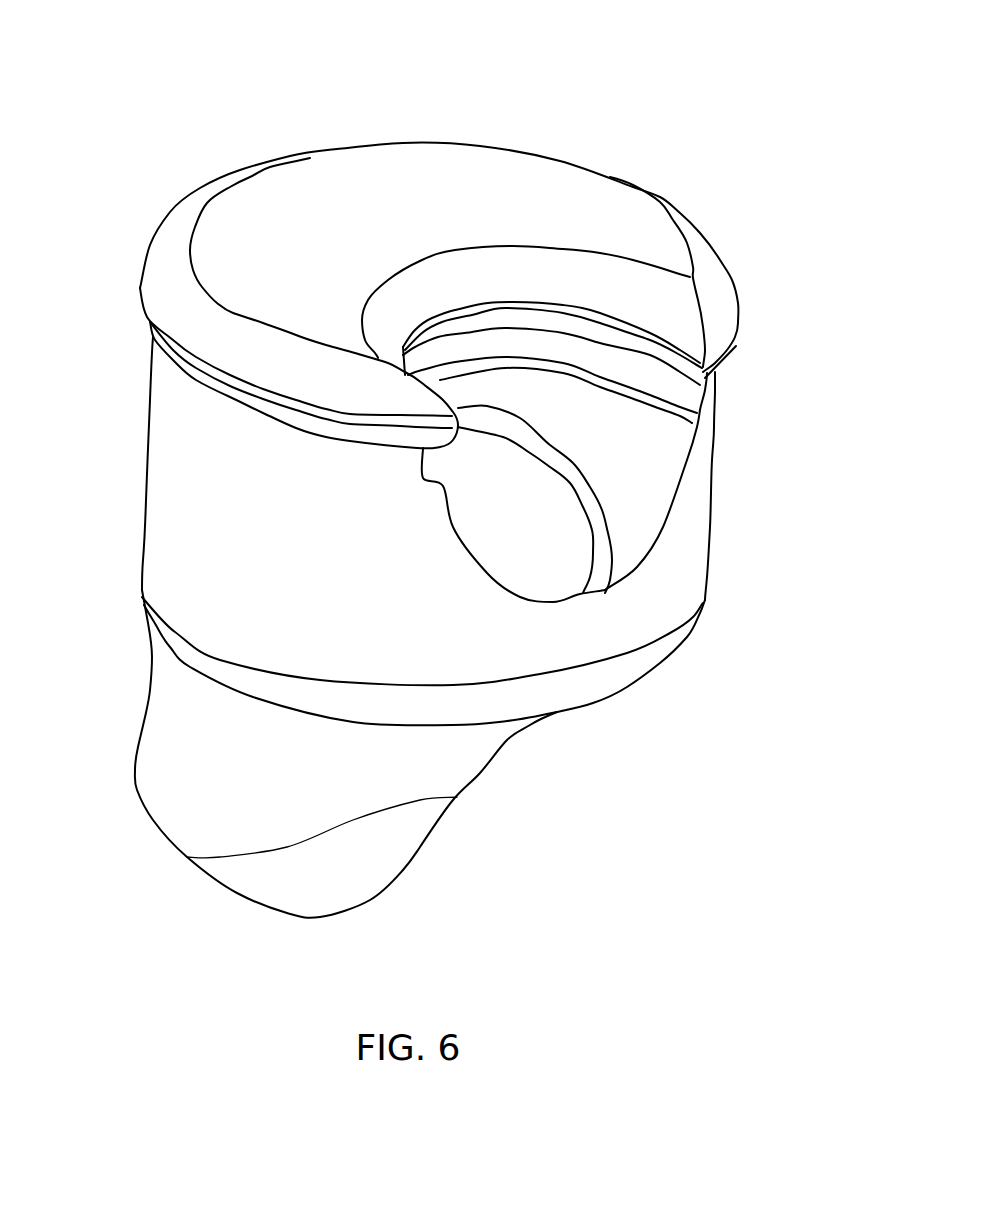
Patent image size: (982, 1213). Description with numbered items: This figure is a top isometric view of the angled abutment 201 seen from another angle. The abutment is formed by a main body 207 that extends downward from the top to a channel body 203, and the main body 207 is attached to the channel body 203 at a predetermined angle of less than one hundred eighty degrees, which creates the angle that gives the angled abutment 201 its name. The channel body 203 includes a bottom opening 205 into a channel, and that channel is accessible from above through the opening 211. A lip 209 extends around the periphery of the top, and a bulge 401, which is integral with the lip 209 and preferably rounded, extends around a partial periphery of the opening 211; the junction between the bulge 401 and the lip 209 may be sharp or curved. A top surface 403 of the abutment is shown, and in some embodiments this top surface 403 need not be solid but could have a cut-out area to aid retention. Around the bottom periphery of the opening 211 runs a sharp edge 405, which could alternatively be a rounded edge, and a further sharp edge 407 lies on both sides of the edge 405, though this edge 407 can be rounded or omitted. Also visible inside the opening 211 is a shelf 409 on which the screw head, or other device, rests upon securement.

The angled abutment 201 is at (699, 78).
The channel body 203 is at (147, 697).
The bottom opening 205 is at (179, 905).
The main body 207 is at (143, 473).
The lip 209 is at (150, 240).
The opening 211 is at (609, 433).
The bulge 401 is at (550, 277).
The top surface 403 is at (356, 196).
The sharp edge 405 is at (550, 607).
The sharp edge 407 is at (456, 487).
The shelf 409 is at (574, 482).